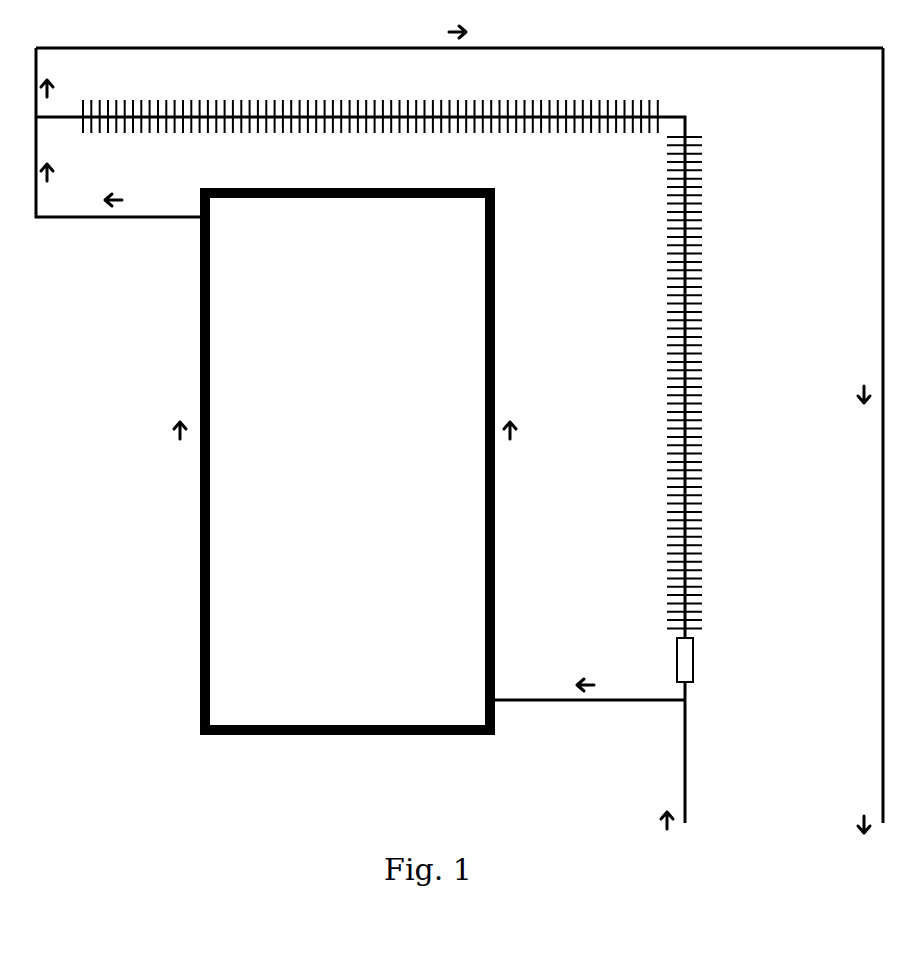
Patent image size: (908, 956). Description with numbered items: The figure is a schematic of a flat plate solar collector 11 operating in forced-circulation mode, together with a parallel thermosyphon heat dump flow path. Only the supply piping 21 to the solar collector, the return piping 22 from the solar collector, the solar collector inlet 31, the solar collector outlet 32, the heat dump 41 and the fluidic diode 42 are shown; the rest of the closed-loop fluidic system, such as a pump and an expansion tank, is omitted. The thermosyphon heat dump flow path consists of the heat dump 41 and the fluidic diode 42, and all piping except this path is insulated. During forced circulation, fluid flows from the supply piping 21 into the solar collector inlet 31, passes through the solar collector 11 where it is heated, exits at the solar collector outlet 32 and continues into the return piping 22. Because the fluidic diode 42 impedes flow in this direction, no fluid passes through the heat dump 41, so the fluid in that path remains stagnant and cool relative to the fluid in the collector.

The flat plate solar collector 11 is at (195, 567).
The supply piping 21 is at (675, 787).
The return piping 22 is at (868, 763).
The solar collector inlet 31 is at (507, 683).
The solar collector outlet 32 is at (194, 220).
The heat dump 41 is at (507, 150).
The fluidic diode 42 is at (702, 659).